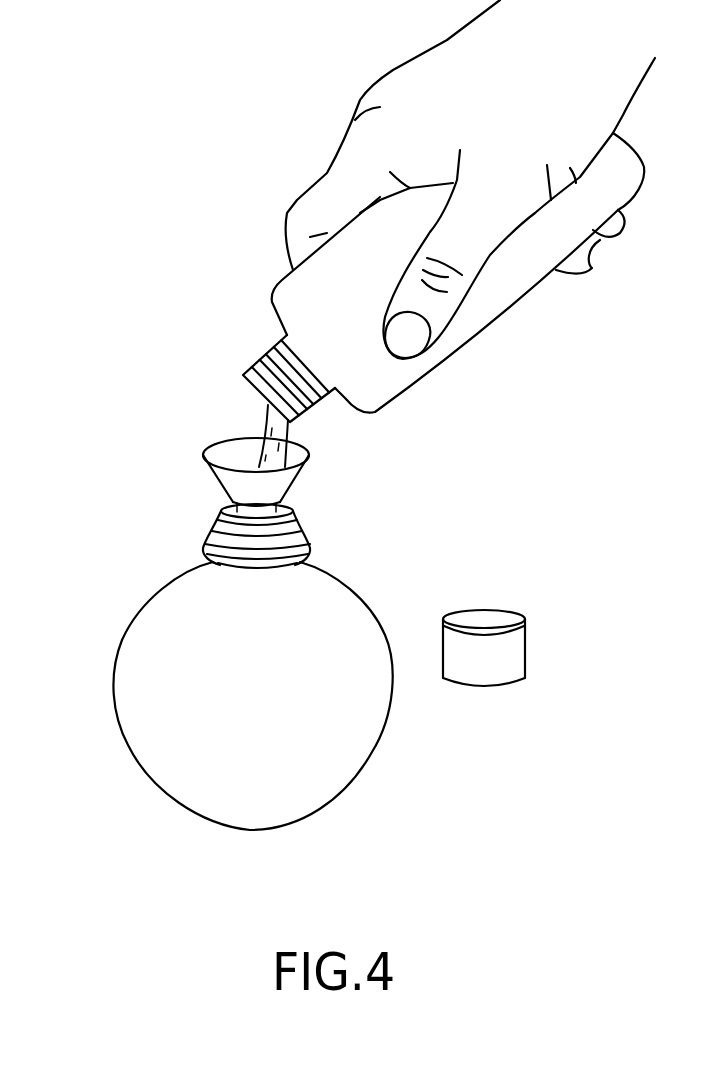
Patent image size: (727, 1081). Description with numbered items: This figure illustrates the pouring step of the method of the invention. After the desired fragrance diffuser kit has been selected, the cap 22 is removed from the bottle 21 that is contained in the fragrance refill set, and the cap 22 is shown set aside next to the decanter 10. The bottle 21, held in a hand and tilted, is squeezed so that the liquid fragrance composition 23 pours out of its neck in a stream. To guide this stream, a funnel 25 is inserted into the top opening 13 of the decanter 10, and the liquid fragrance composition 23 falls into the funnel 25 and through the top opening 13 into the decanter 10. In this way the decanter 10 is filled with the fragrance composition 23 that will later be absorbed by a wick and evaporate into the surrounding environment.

The decanter 10 is at (120, 652).
The top opening 13 is at (220, 510).
The bottle 21 is at (493, 318).
The cap 22 is at (526, 647).
The liquid fragrance composition 23 is at (264, 436).
The funnel 25 is at (300, 473).